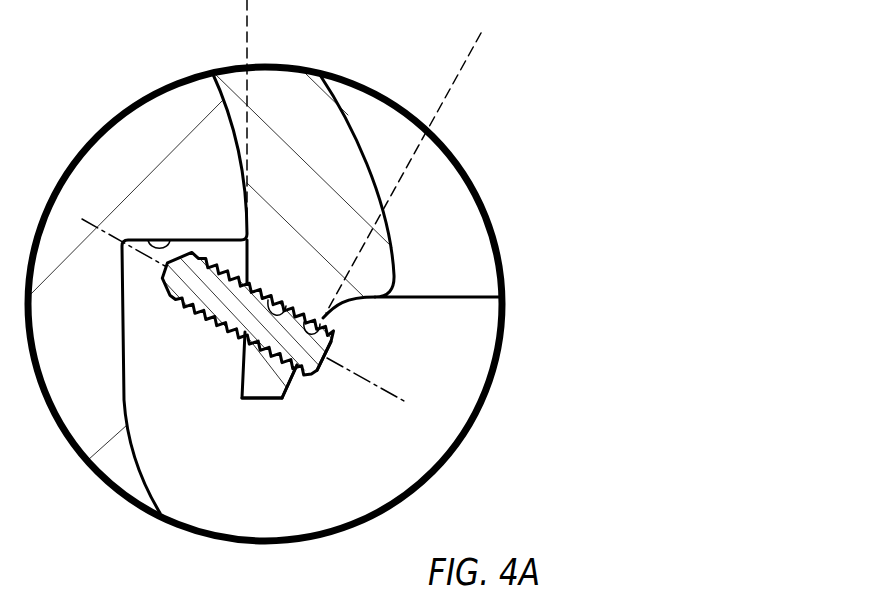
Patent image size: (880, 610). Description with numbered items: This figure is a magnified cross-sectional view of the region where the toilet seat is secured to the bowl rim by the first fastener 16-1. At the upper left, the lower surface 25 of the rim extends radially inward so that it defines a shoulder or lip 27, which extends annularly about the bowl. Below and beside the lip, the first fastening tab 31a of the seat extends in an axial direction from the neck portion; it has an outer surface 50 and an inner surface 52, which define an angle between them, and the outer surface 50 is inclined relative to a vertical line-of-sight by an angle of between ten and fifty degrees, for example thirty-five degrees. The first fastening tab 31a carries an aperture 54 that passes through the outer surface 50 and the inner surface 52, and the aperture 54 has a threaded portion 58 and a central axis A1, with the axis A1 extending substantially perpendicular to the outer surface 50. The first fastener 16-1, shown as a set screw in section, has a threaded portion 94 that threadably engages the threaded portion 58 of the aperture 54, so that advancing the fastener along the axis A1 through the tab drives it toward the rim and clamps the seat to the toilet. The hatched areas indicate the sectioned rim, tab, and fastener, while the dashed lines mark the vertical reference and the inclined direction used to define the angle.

The lower surface 25 is at (173, 238).
The lip 27 is at (211, 238).
The aperture 54 is at (268, 303).
The threaded portion 94 is at (257, 310).
The inner surface 52 is at (240, 380).
The first fastening tab 31a is at (257, 400).
The outer surface 50 is at (292, 387).
The first fastener 16-1 is at (326, 378).
The threaded portion 58 is at (322, 326).
The central axis A1 is at (405, 401).